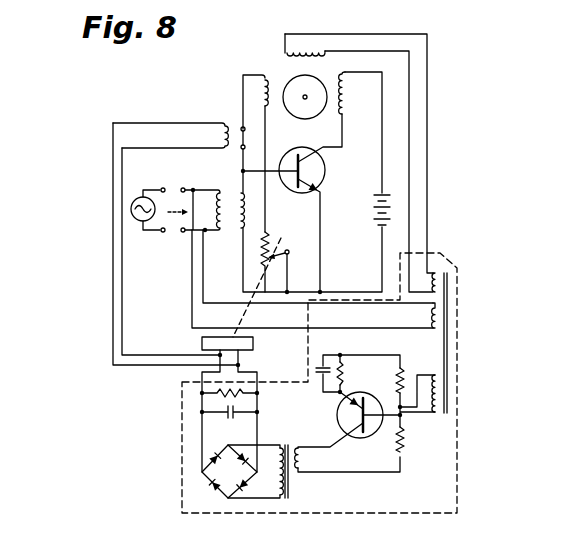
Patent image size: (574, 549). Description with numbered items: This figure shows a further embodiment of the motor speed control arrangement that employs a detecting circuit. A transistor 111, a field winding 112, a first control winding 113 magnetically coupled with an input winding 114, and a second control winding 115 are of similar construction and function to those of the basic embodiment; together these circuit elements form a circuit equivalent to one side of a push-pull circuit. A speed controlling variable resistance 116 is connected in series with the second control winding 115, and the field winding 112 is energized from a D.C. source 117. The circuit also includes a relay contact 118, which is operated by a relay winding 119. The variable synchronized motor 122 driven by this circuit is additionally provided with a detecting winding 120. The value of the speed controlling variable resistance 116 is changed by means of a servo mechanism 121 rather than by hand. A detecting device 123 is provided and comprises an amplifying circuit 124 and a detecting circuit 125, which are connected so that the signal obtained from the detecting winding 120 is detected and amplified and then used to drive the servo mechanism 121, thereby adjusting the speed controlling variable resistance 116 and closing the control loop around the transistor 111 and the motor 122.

The transistor 111 is at (322, 165).
The field winding 112 is at (345, 96).
The first control winding 113 is at (240, 192).
The input winding 114 is at (222, 230).
The second control winding 115 is at (263, 79).
The speed controlling variable resistance 116 is at (268, 236).
The D.C. source 117 is at (378, 208).
The relay contact 118 is at (242, 126).
The relay winding 119 is at (224, 124).
The detecting winding 120 is at (324, 56).
The servo mechanism 121 is at (254, 346).
The variable synchronized motor 122 is at (293, 113).
The detecting device 123 is at (462, 264).
The amplifying circuit 124 is at (362, 463).
The detecting circuit 125 is at (246, 432).